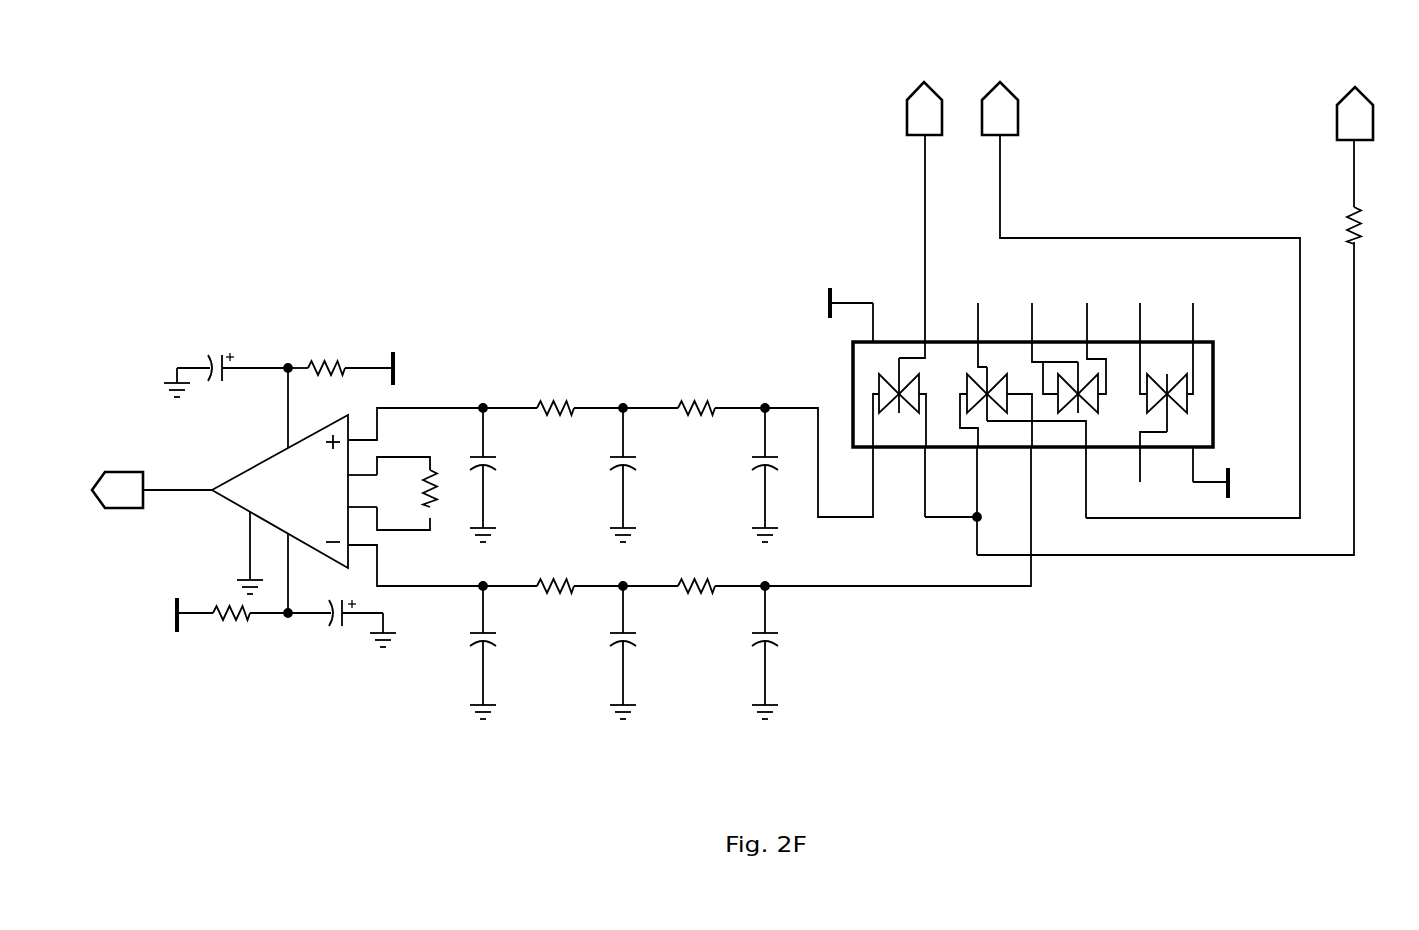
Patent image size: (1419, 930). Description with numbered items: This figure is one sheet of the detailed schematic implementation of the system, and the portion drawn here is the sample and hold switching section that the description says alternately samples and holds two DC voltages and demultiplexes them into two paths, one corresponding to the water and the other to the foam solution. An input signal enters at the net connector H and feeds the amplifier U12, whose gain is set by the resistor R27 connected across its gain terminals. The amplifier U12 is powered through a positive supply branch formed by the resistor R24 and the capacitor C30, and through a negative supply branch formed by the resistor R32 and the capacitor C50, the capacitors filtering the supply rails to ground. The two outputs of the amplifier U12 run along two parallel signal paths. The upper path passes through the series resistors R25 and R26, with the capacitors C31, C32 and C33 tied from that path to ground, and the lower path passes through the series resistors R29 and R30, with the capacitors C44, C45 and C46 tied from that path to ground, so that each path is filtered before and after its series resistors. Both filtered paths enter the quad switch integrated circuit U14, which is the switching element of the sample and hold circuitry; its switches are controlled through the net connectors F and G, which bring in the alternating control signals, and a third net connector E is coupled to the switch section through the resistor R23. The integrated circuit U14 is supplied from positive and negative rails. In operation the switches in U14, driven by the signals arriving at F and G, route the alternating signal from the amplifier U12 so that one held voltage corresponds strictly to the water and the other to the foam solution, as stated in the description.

The input net connector H is at (117, 490).
The instrumentation amplifier AD620 U12 is at (280, 491).
The gain resistor SAT R27 is at (424, 493).
The 10uF supply capacitor C30 is at (226, 395).
The 150 ohm supply resistor R24 is at (359, 344).
The 150 ohm supply resistor R32 is at (215, 639).
The 10uF supply capacitor C50 is at (342, 643).
The 220K resistor R25 is at (554, 380).
The 220K resistor R26 is at (695, 380).
The 220K resistor R29 is at (554, 558).
The 220K resistor R30 is at (695, 558).
The .01uF capacitor C31 is at (509, 475).
The .01uF capacitor C32 is at (598, 475).
The .01uF capacitor C33 is at (740, 475).
The .01uF capacitor C44 is at (458, 652).
The .01uF capacitor C45 is at (599, 652).
The .01uF capacitor C46 is at (740, 652).
The CD4066 quad bilateral switch (S & H switching) U14 is at (1040, 345).
The 1000 ohm resistor R23 is at (1377, 192).
The net connector F is at (924, 108).
The net connector G is at (1000, 108).
The net connector E is at (1355, 113).